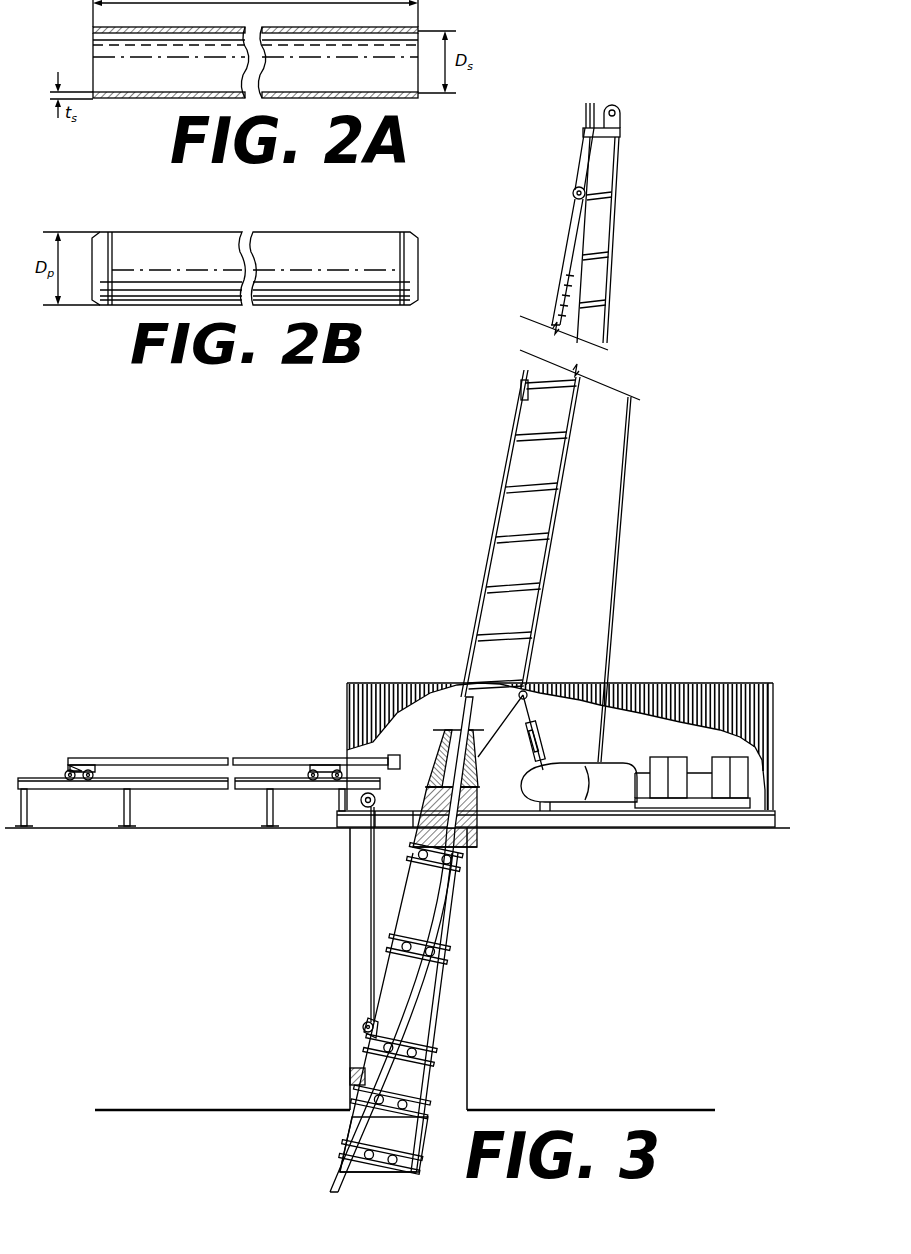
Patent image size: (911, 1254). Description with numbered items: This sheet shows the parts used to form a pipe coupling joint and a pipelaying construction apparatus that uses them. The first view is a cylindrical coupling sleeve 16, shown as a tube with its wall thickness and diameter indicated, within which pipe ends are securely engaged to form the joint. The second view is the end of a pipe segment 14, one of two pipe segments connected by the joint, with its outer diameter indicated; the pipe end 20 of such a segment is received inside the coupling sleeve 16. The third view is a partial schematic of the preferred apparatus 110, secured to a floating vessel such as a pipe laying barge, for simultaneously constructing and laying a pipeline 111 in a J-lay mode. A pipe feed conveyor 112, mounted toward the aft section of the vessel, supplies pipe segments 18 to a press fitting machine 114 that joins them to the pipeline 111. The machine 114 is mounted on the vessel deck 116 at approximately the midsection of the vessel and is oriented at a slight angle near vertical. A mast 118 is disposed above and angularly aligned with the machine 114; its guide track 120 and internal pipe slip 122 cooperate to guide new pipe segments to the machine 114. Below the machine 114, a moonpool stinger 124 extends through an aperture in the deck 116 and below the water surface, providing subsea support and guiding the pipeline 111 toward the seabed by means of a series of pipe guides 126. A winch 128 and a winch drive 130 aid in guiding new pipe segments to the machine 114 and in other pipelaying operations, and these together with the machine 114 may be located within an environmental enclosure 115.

In FIG. 2B, the pipe segment 14 is at (156, 230).
In FIG. 2A, the coupling sleeve 16 is at (172, 99).
In FIG. 3, the pipe segment 18 is at (265, 760).
In FIG. 3, the pipe end 20 is at (432, 908).
In FIG. 3, the apparatus 110 is at (430, 526).
In FIG. 3, the pipeline 111 is at (363, 1133).
In FIG. 3, the pipe feed conveyor 112 is at (200, 742).
In FIG. 3, the press fitting machine 114 is at (475, 820).
In FIG. 3, the environmental enclosure 115 is at (712, 684).
In FIG. 3, the vessel deck 116 is at (683, 822).
In FIG. 3, the mast 118 is at (634, 358).
In FIG. 3, the guide track 120 is at (526, 382).
In FIG. 3, the internal pipe slip 122 is at (553, 283).
In FIG. 3, the moonpool stinger 124 is at (402, 1009).
In FIG. 3, the pipe guides 126 is at (410, 845).
In FIG. 3, the winch 128 is at (616, 798).
In FIG. 3, the winch drive 130 is at (698, 778).